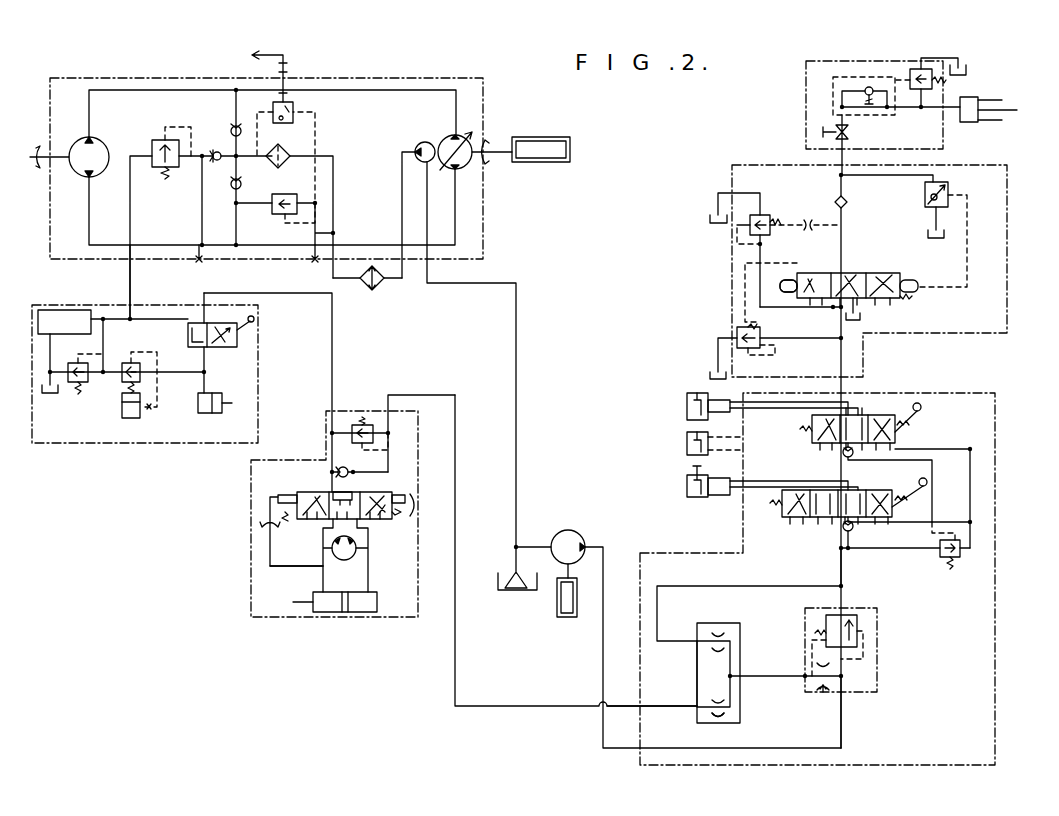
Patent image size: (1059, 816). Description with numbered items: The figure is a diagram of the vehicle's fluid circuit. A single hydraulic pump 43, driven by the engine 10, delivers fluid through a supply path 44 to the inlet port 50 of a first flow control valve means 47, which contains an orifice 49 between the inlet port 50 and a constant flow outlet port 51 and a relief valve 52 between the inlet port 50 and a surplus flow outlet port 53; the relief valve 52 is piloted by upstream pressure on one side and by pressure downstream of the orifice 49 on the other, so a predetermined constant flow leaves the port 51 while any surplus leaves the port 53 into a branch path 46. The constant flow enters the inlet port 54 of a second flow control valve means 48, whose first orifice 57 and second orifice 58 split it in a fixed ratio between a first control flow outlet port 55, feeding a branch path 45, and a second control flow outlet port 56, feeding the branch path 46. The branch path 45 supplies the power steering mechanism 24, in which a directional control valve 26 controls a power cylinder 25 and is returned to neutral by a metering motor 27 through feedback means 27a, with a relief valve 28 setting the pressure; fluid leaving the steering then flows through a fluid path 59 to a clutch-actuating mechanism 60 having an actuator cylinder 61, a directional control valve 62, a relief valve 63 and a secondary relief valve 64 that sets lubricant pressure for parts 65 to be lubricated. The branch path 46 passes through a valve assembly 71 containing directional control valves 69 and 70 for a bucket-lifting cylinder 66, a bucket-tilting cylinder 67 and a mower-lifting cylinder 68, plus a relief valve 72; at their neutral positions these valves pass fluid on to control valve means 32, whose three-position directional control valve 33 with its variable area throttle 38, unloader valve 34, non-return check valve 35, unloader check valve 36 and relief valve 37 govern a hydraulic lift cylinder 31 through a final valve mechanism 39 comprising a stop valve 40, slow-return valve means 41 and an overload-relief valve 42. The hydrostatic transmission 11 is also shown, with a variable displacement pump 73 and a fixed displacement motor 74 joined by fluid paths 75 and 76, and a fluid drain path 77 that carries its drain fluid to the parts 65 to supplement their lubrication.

The engine 10 is at (560, 160).
The hydrostatic transmission 11 is at (208, 68).
The power steering mechanism 24 is at (251, 555).
The power cylinder 25 is at (355, 614).
The directional control valve 26 is at (385, 519).
The metering motor 27 is at (356, 552).
The feedback means 27a is at (265, 570).
The relief valve 28 is at (375, 425).
The hydraulic lift cylinder 31 is at (985, 97).
The control valve means 32 is at (732, 272).
The directional control valve 33 is at (905, 285).
The unloader valve 34 is at (768, 327).
The non-return check valve 35 is at (850, 202).
The unloader check valve 36 is at (945, 182).
The relief valve 37 is at (768, 215).
The variable area throttle 38 is at (780, 287).
The final valve mechanism 39 is at (806, 103).
The stop valve 40 is at (850, 132).
The slow-return valve means 41 is at (850, 77).
The overload-relief valve 42 is at (912, 70).
The hydraulic pump 43 is at (573, 530).
The supply path 44 is at (600, 662).
The branch path 45 is at (455, 678).
The branch path 46 is at (841, 572).
The first flow control valve means 47 is at (880, 655).
The second flow control valve means 48 is at (695, 625).
The orifice 49 is at (822, 692).
The inlet port 50 is at (843, 695).
The constant flow outlet port 51 is at (805, 676).
The relief valve 52 is at (860, 622).
The surplus flow outlet port 53 is at (845, 605).
The inlet port 54 is at (742, 678).
The first control flow outlet port 55 is at (697, 708).
The second control flow outlet port 56 is at (697, 645).
The first orifice 57 is at (718, 722).
The second orifice 58 is at (720, 632).
The fluid path 59 is at (335, 318).
The clutch-actuating mechanism 60 is at (128, 448).
The actuator cylinder 61 is at (222, 413).
The directional control valve 62 is at (225, 348).
The relief valve 63 is at (128, 363).
The secondary relief valve 64 is at (80, 395).
The parts to be lubricated 65 is at (65, 320).
The bucket-lifting cylinder 66 is at (687, 483).
The bucket-tilting cylinder 67 is at (687, 400).
The mower-lifting cylinder 68 is at (687, 440).
The directional control valve 69 is at (893, 496).
The directional control valve 70 is at (880, 412).
The valve assembly 71 is at (995, 600).
The relief valve 72 is at (975, 572).
The variable displacement pump 73 is at (470, 137).
The fixed displacement motor 74 is at (82, 172).
The fluid path 75 is at (345, 78).
The fluid path 76 is at (355, 245).
The fluid drain path 77 is at (133, 297).